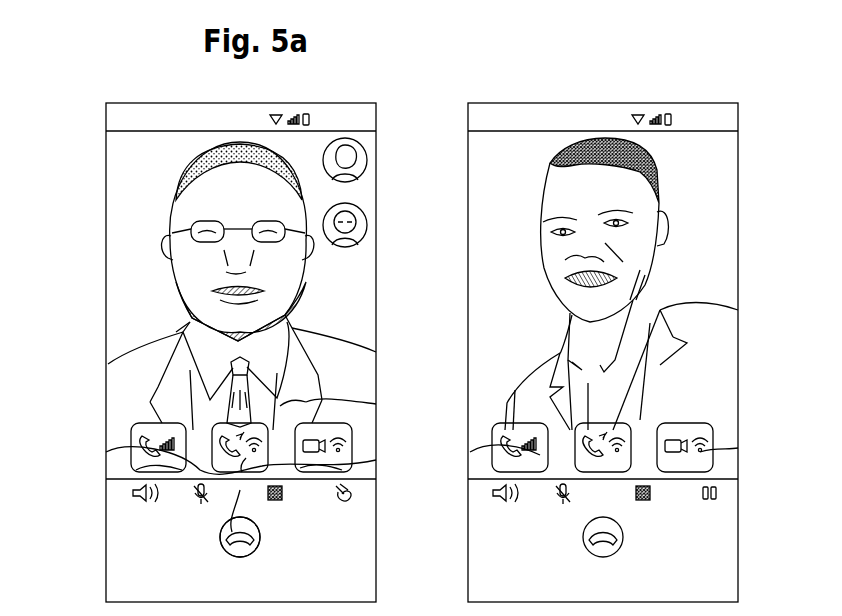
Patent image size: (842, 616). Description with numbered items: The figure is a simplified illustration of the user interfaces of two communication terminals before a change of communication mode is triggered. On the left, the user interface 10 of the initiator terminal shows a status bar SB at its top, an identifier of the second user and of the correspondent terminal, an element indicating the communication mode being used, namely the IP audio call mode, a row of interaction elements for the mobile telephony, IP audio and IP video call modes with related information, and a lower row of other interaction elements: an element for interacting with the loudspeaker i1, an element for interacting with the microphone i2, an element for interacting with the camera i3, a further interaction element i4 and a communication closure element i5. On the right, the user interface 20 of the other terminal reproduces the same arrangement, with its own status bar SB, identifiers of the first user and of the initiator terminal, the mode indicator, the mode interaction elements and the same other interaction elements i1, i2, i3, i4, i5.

The user interface of the initiator terminal 10 is at (265, 99).
The user interface of the correspondent terminal 20 is at (626, 99).
The status bar SB is at (378, 119).
The loudspeaker interaction element i1 is at (131, 498).
The microphone interaction element i2 is at (198, 503).
The camera interaction element i3 is at (290, 491).
The other interaction element i4 is at (344, 506).
The communication closure element i5 is at (253, 554).